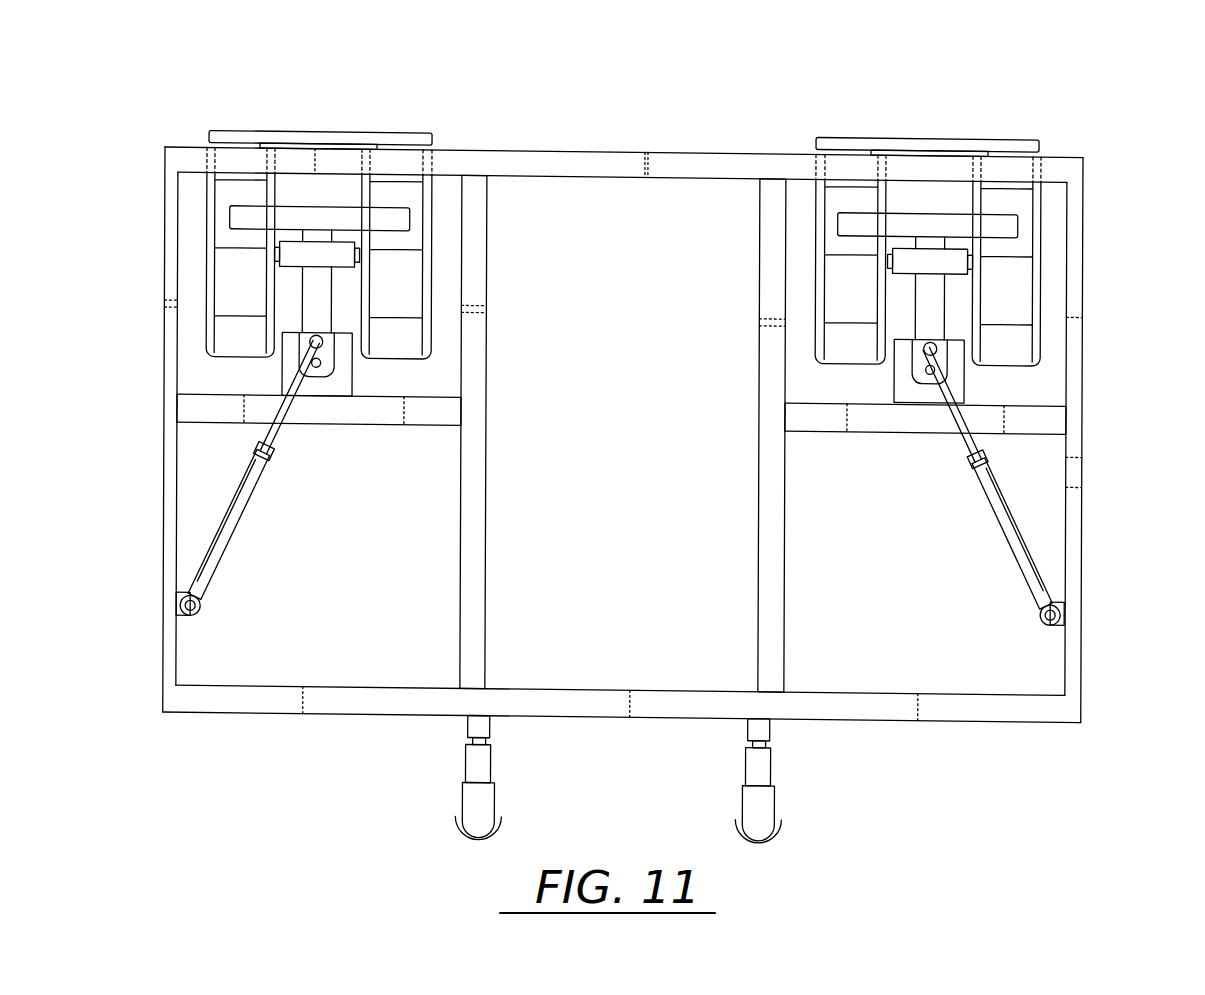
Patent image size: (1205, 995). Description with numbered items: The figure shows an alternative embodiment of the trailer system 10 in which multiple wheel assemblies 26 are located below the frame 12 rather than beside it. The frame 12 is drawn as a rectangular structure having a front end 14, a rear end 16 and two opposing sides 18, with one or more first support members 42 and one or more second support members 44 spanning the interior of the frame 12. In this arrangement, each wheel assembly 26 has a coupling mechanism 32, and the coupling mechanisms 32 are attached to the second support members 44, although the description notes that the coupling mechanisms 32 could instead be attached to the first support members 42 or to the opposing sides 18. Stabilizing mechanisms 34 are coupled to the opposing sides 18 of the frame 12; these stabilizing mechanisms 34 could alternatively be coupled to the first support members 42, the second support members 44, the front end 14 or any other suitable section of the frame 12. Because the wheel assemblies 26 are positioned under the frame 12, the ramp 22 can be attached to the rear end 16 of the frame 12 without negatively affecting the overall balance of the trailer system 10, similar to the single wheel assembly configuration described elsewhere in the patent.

The trailer system 10 is at (655, 444).
The frame 12 is at (654, 444).
The front end 14 is at (621, 742).
The rear end 16 is at (624, 112).
The opposing sides 18 is at (1105, 440).
The ramp 22 is at (624, 100).
The wheel assemblies 26 is at (677, 257).
The coupling mechanisms 32 is at (623, 368).
The stabilizing mechanisms 34 is at (620, 482).
The first support members 42 is at (623, 433).
The second support members 44 is at (621, 461).